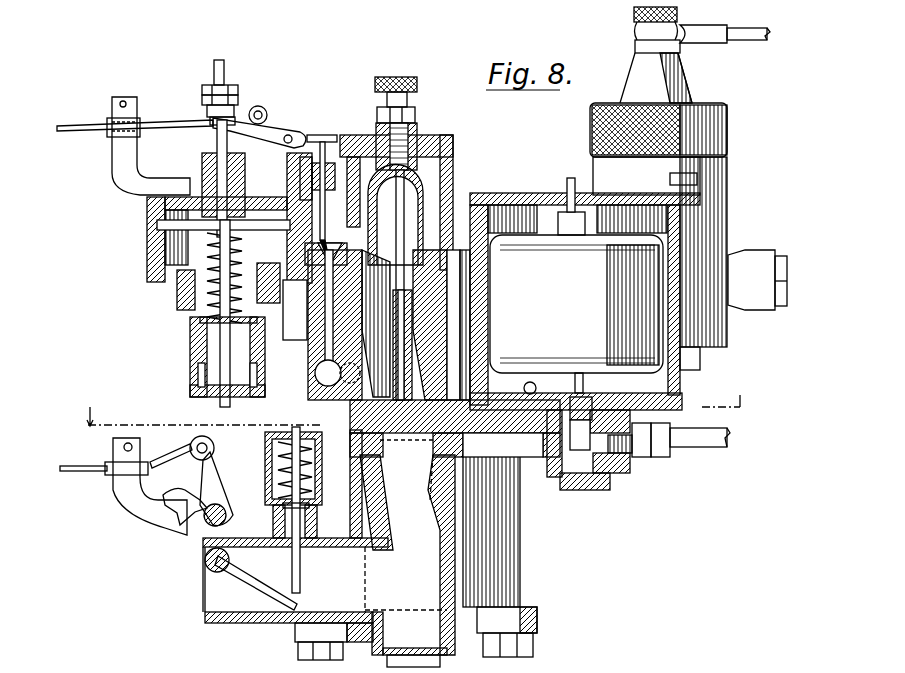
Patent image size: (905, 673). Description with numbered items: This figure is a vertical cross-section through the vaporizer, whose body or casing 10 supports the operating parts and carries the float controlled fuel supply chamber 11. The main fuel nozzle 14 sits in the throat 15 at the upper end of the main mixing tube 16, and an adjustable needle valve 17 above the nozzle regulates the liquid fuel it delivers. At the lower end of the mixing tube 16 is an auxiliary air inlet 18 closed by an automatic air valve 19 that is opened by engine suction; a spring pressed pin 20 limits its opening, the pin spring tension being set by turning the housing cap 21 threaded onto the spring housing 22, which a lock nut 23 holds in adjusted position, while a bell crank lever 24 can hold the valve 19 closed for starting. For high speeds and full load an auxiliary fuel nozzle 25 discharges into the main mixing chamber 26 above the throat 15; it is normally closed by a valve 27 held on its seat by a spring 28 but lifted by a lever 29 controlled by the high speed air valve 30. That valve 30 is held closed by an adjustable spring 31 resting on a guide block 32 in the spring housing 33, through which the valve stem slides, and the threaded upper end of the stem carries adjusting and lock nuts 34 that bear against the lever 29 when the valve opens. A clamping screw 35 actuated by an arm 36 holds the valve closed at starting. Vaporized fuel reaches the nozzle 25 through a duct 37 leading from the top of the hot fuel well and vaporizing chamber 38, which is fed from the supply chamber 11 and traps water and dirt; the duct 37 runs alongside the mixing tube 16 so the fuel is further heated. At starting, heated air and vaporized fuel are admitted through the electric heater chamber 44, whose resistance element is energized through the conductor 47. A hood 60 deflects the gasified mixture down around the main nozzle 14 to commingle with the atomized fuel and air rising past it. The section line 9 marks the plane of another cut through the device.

The section line 9 is at (412, 401).
The body or casing 10 is at (462, 368).
The float controlled fuel supply chamber 11 is at (507, 194).
The main fuel nozzle 14 is at (412, 302).
The throat 15 is at (378, 323).
The main mixing tube 16 is at (407, 547).
The adjustable needle valve 17 is at (418, 135).
The auxiliary air inlet 18 is at (392, 533).
The automatic air valve 19 is at (305, 608).
The spring pressed pin 20 is at (300, 560).
The housing cap 21 is at (265, 447).
The spring housing 22 is at (273, 509).
The lock nut 23 is at (328, 513).
The bell crank lever 24 is at (172, 530).
The auxiliary fuel nozzle 25 is at (340, 257).
The main mixing chamber 26 is at (343, 176).
The valve 27 is at (318, 251).
The spring 28 is at (331, 135).
The lever 29 is at (279, 129).
The high speed air valve 30 is at (246, 232).
The adjustable spring 31 is at (197, 308).
The guide block 32 is at (200, 370).
The spring housing 33 is at (190, 392).
The adjusting and lock nuts 34 is at (238, 88).
The clamping screw 35 is at (202, 167).
The arm 36 is at (262, 108).
The duct 37 is at (322, 333).
The hot fuel well and vaporizing chamber 38 is at (430, 612).
The electric heater chamber 44 is at (728, 238).
The conductor 47 is at (745, 43).
The hood 60 is at (419, 191).